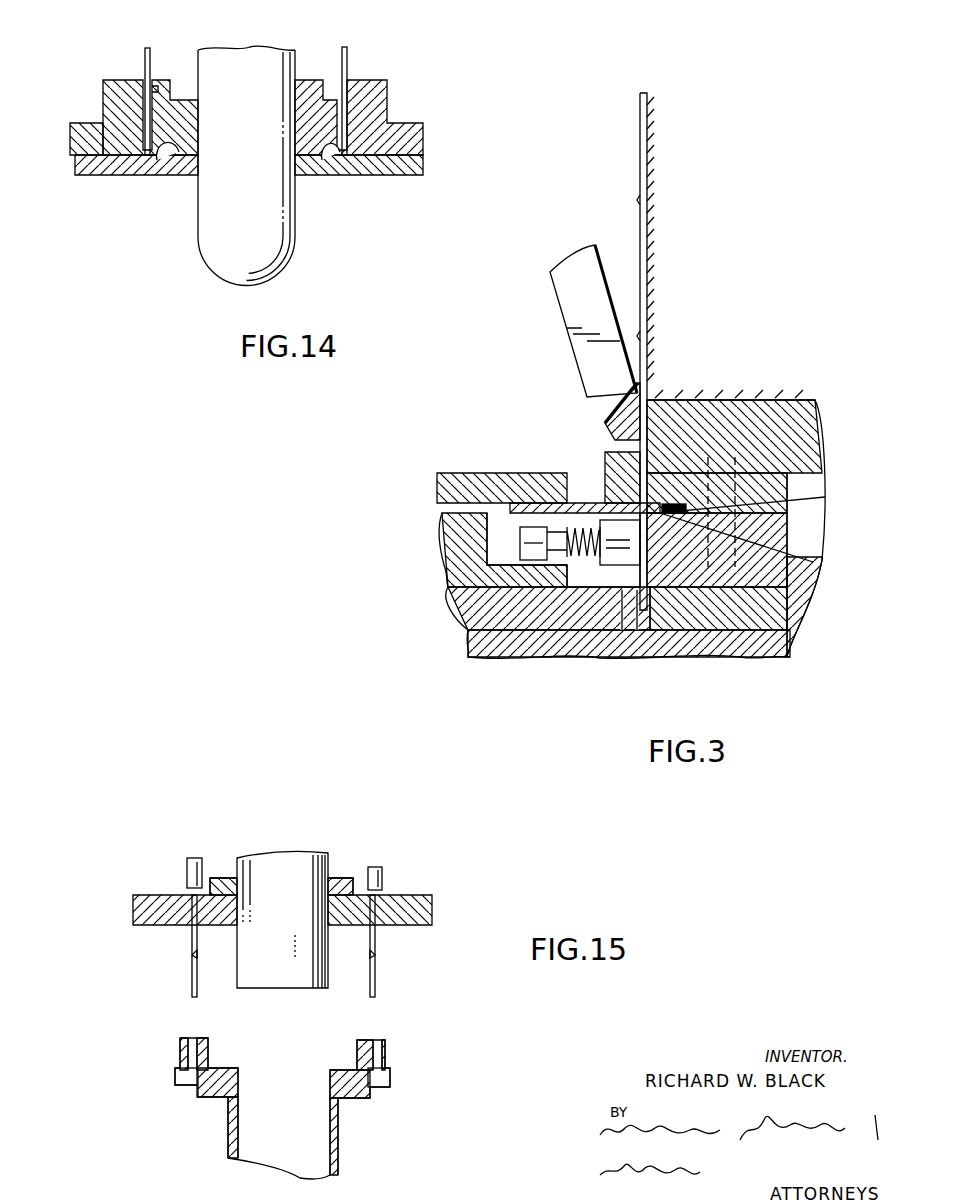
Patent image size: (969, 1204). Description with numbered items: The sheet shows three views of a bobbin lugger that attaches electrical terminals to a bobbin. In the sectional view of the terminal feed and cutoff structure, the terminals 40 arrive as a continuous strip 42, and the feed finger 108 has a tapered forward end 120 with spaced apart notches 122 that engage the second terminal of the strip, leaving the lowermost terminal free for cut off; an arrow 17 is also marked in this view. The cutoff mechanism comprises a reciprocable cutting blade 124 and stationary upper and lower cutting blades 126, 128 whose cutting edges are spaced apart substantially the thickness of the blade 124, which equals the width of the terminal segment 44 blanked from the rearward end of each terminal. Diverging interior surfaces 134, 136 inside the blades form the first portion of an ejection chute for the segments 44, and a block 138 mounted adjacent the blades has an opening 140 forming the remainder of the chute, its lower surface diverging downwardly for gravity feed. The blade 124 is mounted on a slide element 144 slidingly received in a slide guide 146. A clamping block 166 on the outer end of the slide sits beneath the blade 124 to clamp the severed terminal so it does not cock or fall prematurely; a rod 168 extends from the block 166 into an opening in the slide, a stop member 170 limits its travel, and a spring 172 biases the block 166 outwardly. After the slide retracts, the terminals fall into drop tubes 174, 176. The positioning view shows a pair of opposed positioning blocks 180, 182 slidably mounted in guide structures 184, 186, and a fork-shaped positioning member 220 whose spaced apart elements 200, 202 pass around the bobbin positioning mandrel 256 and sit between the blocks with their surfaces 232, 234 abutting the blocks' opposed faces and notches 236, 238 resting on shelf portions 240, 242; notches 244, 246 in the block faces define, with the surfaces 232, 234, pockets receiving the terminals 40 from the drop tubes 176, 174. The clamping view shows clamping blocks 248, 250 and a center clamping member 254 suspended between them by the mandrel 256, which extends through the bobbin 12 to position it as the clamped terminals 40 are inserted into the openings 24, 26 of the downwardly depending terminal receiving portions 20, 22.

In FIG. 15, the bobbin 12 is at (362, 1097).
In FIG. 3, the section line 17 is at (534, 393).
In FIG. 15, the terminal receiving portion 20 is at (171, 1062).
In FIG. 15, the terminal receiving portion 22 is at (395, 1068).
In FIG. 15, the opening 24 is at (192, 1040).
In FIG. 15, the opening 26 is at (375, 1042).
In FIG. 14, the electrical terminal 40 is at (149, 50).
In FIG. 3, the electrical terminal 40 is at (640, 612).
In FIG. 15, the electrical terminal 40 is at (192, 958).
In FIG. 3, the terminal strip 42 is at (631, 189).
In FIG. 3, the terminal segment 44 is at (690, 508).
In FIG. 3, the feed finger 108 is at (565, 298).
In FIG. 3, the forward end of feed finger 120 is at (610, 425).
In FIG. 3, the notches 122 is at (690, 395).
In FIG. 3, the reciprocable cutting blade 124 is at (577, 498).
In FIG. 3, the stationary upper cutting blade 126 is at (688, 480).
In FIG. 3, the stationary lower cutting blade 128 is at (680, 590).
In FIG. 3, the diverging interior surface 134 is at (825, 497).
In FIG. 3, the diverging interior surface 136 is at (787, 550).
In FIG. 3, the block 138 is at (807, 607).
In FIG. 3, the opening 140 is at (812, 567).
In FIG. 3, the slide element 144 is at (447, 530).
In FIG. 3, the slide guide 146 is at (452, 603).
In FIG. 3, the clamping block 166 is at (612, 566).
In FIG. 3, the rod 168 is at (572, 556).
In FIG. 3, the stop member 170 is at (528, 560).
In FIG. 3, the spring 172 is at (560, 565).
In FIG. 3, the drop tube 174 is at (648, 656).
In FIG. 15, the drop tube 174 is at (380, 882).
In FIG. 15, the drop tube 176 is at (188, 870).
In FIG. 14, the positioning block 180 is at (110, 93).
In FIG. 14, the positioning block 182 is at (378, 100).
In FIG. 14, the guide structure 184 is at (108, 170).
In FIG. 14, the guide structure 186 is at (416, 170).
In FIG. 14, the spaced apart element 200 is at (167, 173).
In FIG. 14, the spaced apart element 202 is at (312, 173).
In FIG. 14, the fork-shaped positioning member 220 is at (308, 72).
In FIG. 14, the surface 232 is at (141, 110).
In FIG. 14, the surface 234 is at (340, 122).
In FIG. 14, the notch 236 is at (148, 162).
In FIG. 14, the notch 238 is at (333, 160).
In FIG. 14, the shelf portion 240 is at (184, 160).
In FIG. 14, the shelf portion 242 is at (328, 168).
In FIG. 14, the notch 244 is at (154, 88).
In FIG. 14, the notch 246 is at (338, 100).
In FIG. 15, the clamping block 248 is at (150, 925).
In FIG. 15, the clamping block 250 is at (420, 925).
In FIG. 15, the center clamping member 254 is at (221, 878).
In FIG. 14, the bobbin positioning mandrel 256 is at (285, 255).
In FIG. 15, the bobbin positioning mandrel 256 is at (298, 866).